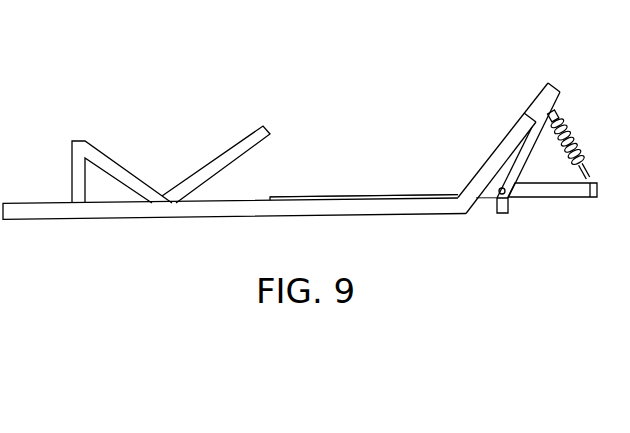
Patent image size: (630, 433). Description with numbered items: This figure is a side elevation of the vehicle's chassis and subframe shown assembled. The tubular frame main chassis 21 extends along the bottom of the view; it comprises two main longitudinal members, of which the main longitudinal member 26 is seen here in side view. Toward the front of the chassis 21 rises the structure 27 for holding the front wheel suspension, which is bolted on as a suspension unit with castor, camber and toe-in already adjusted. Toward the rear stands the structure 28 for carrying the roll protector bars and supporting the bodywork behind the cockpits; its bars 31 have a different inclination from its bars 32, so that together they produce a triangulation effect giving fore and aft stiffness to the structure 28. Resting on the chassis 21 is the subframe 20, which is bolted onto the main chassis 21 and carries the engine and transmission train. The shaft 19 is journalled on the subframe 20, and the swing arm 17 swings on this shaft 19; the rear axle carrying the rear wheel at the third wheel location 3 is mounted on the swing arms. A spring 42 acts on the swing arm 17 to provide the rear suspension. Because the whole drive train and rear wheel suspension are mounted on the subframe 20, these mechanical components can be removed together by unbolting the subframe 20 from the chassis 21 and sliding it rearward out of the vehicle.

The third wheel location 3 is at (622, 89).
The swing arm 17 is at (543, 192).
The shaft 19 is at (493, 207).
The subframe 20 is at (409, 196).
The main chassis 21 is at (337, 178).
The main longitudinal member 26 is at (172, 210).
The front wheel suspension holding structure 27 is at (97, 140).
The roll protector bar carrying structure 28 is at (546, 80).
The bar 31 is at (498, 153).
The bar 32 is at (522, 157).
The spring 42 is at (568, 123).